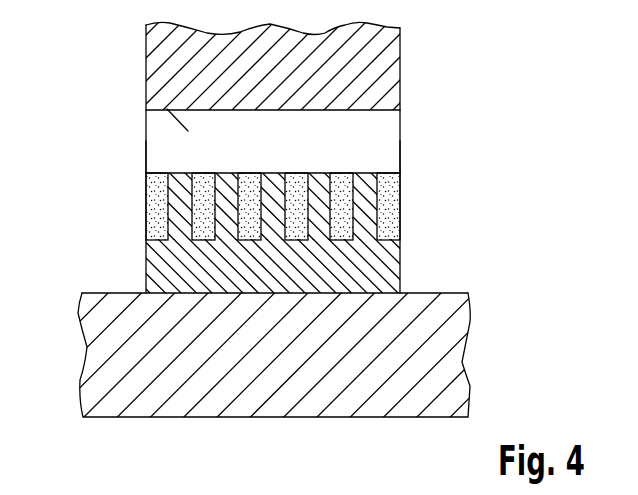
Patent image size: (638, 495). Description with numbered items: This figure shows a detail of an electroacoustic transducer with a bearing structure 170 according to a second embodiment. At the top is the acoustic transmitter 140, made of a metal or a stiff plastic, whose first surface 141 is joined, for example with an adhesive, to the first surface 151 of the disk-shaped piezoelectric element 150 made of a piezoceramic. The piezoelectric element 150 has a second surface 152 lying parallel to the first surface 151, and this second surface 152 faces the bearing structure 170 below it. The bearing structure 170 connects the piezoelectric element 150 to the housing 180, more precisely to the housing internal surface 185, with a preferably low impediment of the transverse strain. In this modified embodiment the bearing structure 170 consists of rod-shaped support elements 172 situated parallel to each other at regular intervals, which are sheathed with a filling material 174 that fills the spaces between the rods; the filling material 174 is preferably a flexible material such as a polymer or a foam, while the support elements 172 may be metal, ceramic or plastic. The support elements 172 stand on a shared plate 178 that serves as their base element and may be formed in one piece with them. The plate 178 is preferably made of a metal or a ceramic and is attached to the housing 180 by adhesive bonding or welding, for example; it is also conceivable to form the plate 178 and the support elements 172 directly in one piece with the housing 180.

The acoustic transmitter 140 is at (383, 58).
The first surface 141 is at (176, 116).
The piezoelectric element 150 is at (383, 143).
The first surface 151 is at (350, 93).
The second surface 152 is at (403, 187).
The bearing structure 170 is at (110, 240).
The support elements 172 is at (227, 183).
The filling material 174 is at (297, 183).
The plate 178 is at (385, 262).
The housing 180 is at (277, 403).
The housing internal surface 185 is at (425, 275).